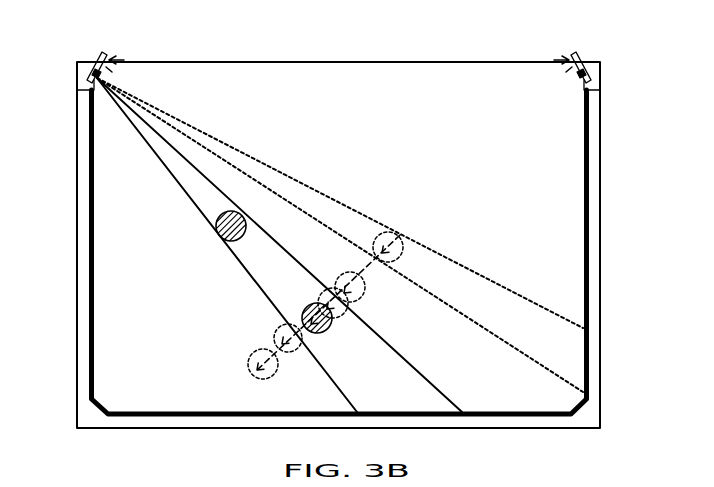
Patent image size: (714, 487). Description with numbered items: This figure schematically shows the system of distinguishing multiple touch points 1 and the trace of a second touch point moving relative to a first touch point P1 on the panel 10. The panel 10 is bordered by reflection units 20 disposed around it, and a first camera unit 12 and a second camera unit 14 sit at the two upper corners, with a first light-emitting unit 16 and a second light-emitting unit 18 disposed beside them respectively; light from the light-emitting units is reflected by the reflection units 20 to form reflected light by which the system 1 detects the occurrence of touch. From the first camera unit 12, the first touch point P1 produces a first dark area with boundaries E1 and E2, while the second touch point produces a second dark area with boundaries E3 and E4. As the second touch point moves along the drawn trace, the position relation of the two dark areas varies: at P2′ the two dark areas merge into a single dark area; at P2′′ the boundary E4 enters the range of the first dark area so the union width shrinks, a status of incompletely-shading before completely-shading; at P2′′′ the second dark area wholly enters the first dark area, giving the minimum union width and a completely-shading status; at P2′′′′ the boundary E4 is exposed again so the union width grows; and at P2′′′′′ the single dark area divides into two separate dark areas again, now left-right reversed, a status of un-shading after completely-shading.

The system of distinguishing multiple touch points 1 is at (78, 56).
The panel 10 is at (349, 80).
The first camera unit 12 is at (78, 70).
The second camera unit 14 is at (601, 68).
The first light-emitting unit 16 is at (104, 48).
The second light-emitting unit 18 is at (579, 48).
The reflection units 20 is at (92, 258).
The first touch point P1 is at (219, 237).
The second touch point position P2′ is at (364, 291).
The second touch point position P2′′ is at (349, 312).
The second touch point position P2′′′ is at (327, 329).
The second touch point position P2′′′′ is at (284, 326).
The second touch point position P2′′′′′ is at (253, 358).
The boundary of first dark area E1 is at (413, 367).
The boundary of first dark area E2 is at (345, 392).
The boundary of second dark area E3 is at (525, 299).
The boundary of second dark area E4 is at (532, 360).